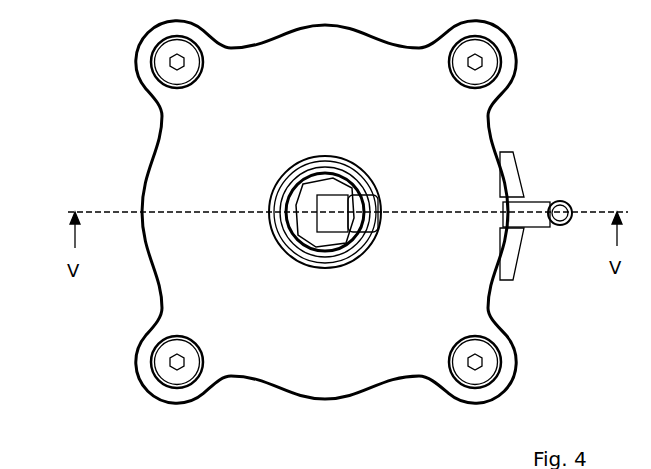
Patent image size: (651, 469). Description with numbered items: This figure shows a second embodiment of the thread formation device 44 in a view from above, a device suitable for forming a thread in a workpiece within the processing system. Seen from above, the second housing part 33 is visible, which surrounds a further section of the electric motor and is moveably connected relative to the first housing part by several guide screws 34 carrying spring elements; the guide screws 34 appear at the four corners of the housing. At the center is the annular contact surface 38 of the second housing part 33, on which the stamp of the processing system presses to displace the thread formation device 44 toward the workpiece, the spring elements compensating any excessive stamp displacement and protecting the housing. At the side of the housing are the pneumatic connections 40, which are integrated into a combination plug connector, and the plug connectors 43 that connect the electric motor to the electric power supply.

The second housing part 33 is at (200, 282).
The guide screws 34 is at (176, 60).
The annular contact surface 38 is at (182, 169).
The pneumatic connections 40 is at (558, 224).
The plug connectors 43 is at (516, 240).
The thread formation device 44 is at (108, 108).